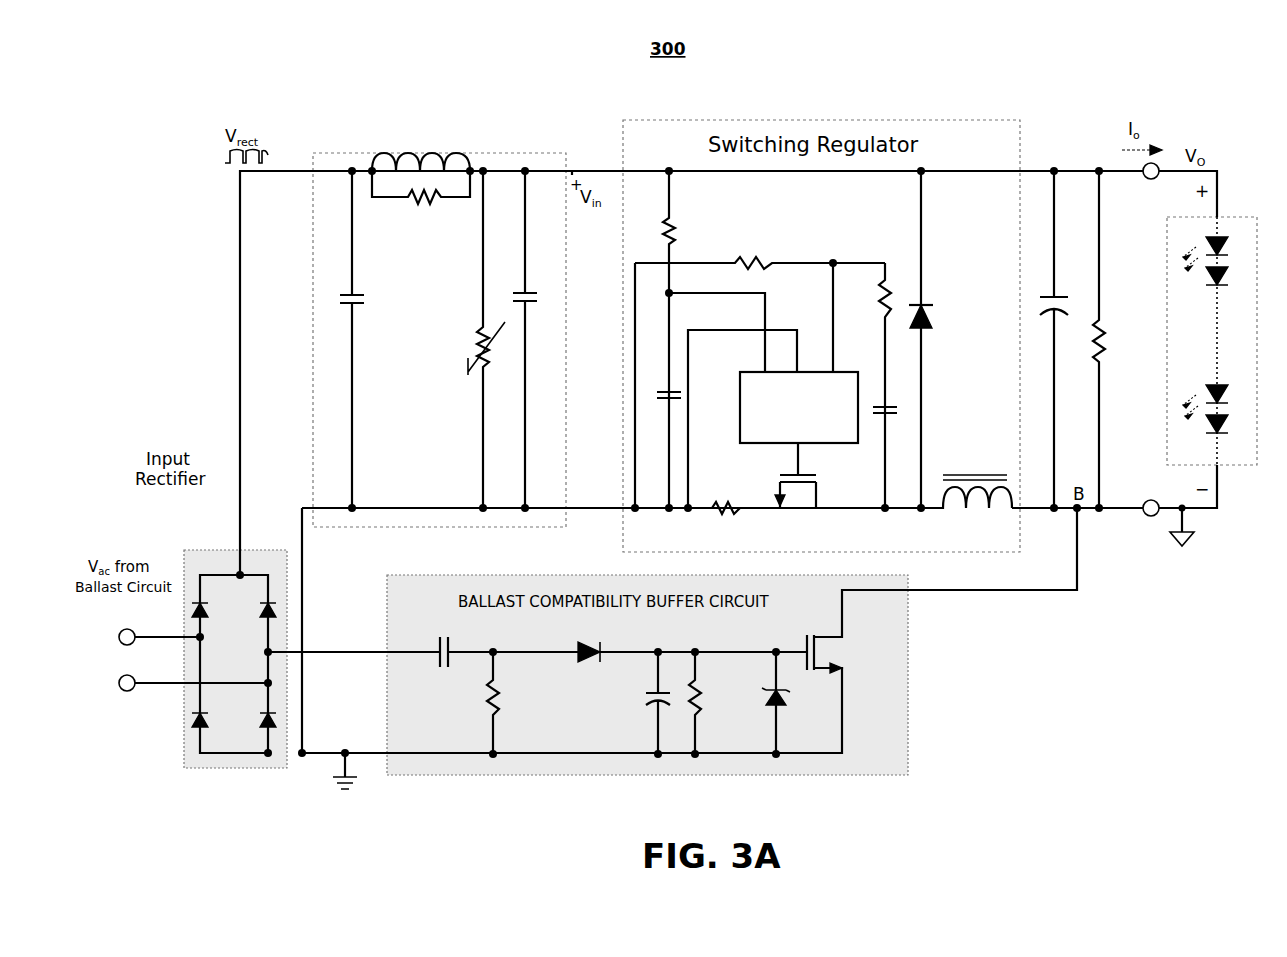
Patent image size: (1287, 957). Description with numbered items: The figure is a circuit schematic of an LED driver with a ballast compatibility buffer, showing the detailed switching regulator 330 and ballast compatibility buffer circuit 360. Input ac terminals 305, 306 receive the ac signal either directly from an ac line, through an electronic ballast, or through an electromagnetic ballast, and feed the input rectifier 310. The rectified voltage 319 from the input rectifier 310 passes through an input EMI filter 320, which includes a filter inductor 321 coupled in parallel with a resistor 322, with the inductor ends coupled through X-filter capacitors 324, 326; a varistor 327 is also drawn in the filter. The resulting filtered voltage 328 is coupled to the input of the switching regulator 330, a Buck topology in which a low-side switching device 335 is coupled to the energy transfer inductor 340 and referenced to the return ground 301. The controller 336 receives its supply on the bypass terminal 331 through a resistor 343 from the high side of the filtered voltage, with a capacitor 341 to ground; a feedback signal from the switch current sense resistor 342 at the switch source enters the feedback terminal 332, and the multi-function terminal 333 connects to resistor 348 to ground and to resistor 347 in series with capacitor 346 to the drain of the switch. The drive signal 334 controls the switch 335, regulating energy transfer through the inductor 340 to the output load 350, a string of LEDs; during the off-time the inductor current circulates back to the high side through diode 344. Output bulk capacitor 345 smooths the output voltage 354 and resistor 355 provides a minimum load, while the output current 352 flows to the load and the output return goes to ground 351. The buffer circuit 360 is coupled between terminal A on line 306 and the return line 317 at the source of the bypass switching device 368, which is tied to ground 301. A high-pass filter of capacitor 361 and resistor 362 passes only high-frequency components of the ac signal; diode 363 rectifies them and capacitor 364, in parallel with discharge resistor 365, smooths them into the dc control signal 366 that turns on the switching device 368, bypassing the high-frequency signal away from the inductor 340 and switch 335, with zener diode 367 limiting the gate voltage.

The return ground 301 is at (336, 792).
The input ac terminal 305 is at (137, 632).
The input ac terminal 306 is at (137, 680).
The input rectifier 310 is at (212, 550).
The return line 317 is at (343, 748).
The rectified voltage Vrect 319 is at (262, 145).
The input EMI filter 320 is at (490, 152).
The filter inductor 321 is at (445, 160).
The resistor 322 is at (418, 192).
The X-filter capacitor 324 is at (352, 292).
The X-filter capacitor 326 is at (528, 290).
The varistor RV 327 is at (470, 340).
The filtered voltage Vin 328 is at (570, 168).
The switching regulator 330 is at (790, 120).
The bypass (BP) terminal 331 is at (735, 375).
The feedback (FB) controller terminal 332 is at (800, 345).
The multi-function (M) controller terminal 333 is at (840, 345).
The drive signal 334 is at (792, 460).
The low-side switching device 335 is at (798, 495).
The controller 336 is at (755, 420).
The inductor L1 340 is at (978, 455).
The capacitor 341 is at (665, 392).
The switch current sense resistor Rsns 342 is at (732, 512).
The resistor 343 is at (676, 236).
The diode 344 is at (928, 310).
The output bulk capacitor Co 345 is at (1060, 296).
The capacitor 346 is at (878, 418).
The resistor 347 is at (887, 290).
The resistor 348 is at (752, 260).
The output load 350 is at (1232, 215).
The output ground 351 is at (1178, 548).
The output current Io 352 is at (1135, 120).
The output voltage Vo 354 is at (1193, 145).
The resistor 355 is at (1103, 330).
The ballast compatibility buffer circuit 360 is at (600, 775).
The capacitor 361 is at (437, 645).
The resistor 362 is at (487, 702).
The diode 363 is at (588, 662).
The capacitor 364 is at (655, 705).
The discharge resistor 365 is at (705, 700).
The control signal 366 is at (800, 650).
The zener diode 367 is at (787, 703).
The bypass switching device 368 is at (840, 660).